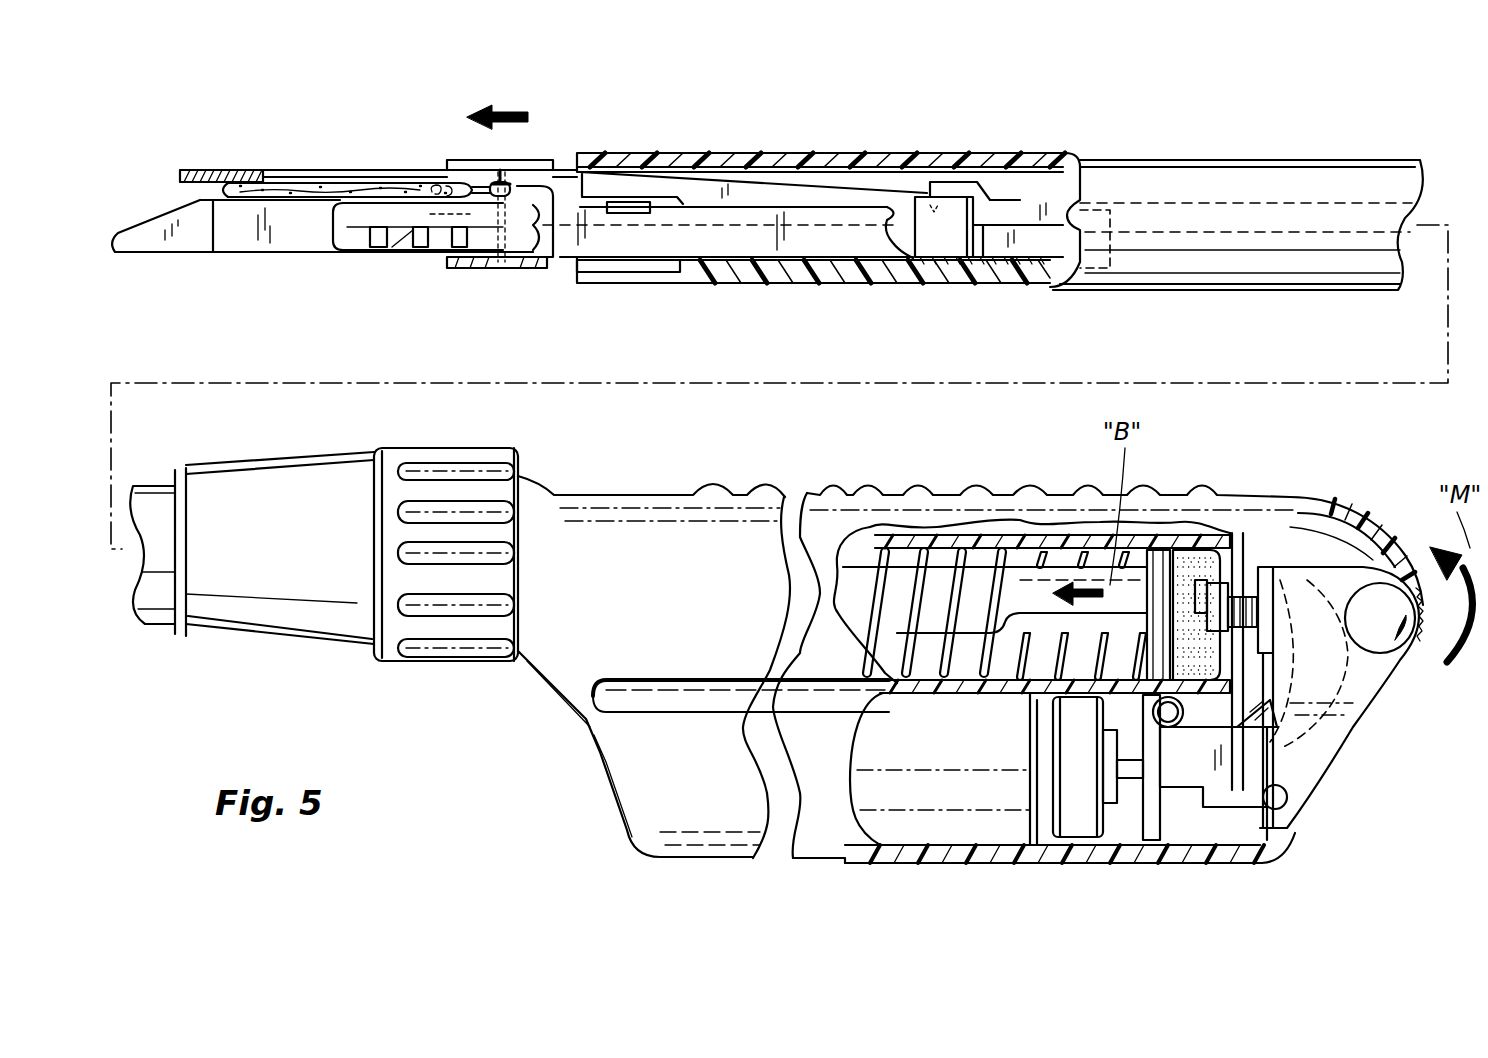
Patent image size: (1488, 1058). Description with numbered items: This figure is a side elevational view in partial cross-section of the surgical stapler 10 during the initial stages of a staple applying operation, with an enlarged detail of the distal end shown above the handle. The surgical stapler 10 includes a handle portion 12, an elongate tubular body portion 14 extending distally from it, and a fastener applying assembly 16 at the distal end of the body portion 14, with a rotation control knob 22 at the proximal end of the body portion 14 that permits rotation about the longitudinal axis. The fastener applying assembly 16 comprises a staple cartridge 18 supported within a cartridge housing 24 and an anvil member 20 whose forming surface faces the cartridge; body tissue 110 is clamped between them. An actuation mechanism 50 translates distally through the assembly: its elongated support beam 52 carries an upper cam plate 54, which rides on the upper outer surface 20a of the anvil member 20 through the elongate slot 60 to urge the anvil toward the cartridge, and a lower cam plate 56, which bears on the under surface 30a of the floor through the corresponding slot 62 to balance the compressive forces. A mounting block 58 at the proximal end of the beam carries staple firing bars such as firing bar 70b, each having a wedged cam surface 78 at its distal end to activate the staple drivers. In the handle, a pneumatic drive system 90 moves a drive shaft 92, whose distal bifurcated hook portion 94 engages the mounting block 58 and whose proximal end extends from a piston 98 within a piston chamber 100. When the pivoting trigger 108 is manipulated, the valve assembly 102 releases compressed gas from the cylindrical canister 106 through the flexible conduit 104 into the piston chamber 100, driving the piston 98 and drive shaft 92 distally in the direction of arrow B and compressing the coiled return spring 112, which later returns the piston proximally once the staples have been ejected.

The surgical stapler 10 is at (1104, 124).
The handle portion 12 is at (633, 777).
The elongate tubular body portion 14 is at (1210, 175).
The fastener applying assembly 16 is at (200, 153).
The staple cartridge 18 is at (146, 240).
The anvil member 20 is at (217, 178).
The upper outer surface of anvil member 20a is at (323, 170).
The rotation control knob 22 is at (426, 663).
The cartridge housing 24 is at (302, 222).
The under outer surface of floor 30a is at (272, 257).
The actuation mechanism 50 is at (449, 151).
The elongated support beam 52 is at (703, 195).
The upper cam plate 54 is at (533, 163).
The lower cam plate 56 is at (498, 266).
The mounting block 58 is at (943, 237).
The elongate slot 60 is at (265, 181).
The slot 62 is at (370, 250).
The staple firing bar 70b is at (537, 238).
The wedged cam surface 78 is at (436, 248).
The pneumatic drive system 90 is at (1255, 557).
The drive shaft 92 is at (1057, 215).
The bifurcated hook portion 94 is at (950, 188).
The piston 98 is at (1158, 575).
The piston chamber 100 is at (1212, 563).
The valve assembly 102 is at (1190, 765).
The flexible conduit 104 is at (1263, 730).
The cylindrical canister 106 is at (933, 760).
The pivoting trigger 108 is at (1387, 680).
The body tissue 110 is at (262, 190).
The coiled return spring 112 is at (1055, 545).